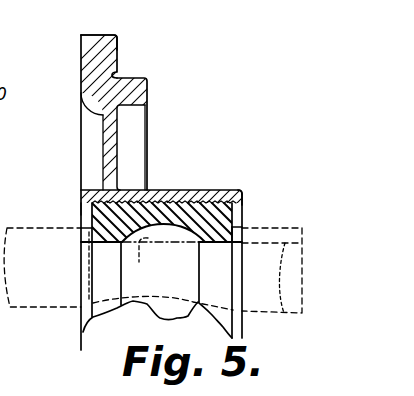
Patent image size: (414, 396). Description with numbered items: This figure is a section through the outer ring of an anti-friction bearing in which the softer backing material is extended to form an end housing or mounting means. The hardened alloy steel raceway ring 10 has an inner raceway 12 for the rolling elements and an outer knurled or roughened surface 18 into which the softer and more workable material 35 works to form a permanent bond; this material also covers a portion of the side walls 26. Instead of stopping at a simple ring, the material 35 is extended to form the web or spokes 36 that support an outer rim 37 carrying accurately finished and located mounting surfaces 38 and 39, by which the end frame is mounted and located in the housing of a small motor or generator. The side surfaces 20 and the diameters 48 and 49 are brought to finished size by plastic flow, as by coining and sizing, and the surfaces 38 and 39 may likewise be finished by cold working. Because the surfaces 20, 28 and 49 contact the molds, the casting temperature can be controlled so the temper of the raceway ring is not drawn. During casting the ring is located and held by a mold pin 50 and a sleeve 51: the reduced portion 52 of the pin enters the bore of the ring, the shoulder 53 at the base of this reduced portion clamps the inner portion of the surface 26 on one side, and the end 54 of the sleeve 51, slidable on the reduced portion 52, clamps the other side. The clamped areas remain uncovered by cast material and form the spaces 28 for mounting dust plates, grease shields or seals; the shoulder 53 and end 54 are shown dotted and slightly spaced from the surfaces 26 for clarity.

The raceway ring 10 is at (244, 213).
The inner raceway 12 is at (167, 227).
The knurled or roughened surface 18 is at (188, 196).
The side surface 20 is at (243, 195).
The side wall 26 is at (235, 243).
The space for mounting plates 28 is at (236, 231).
The softer and more workable material 35 is at (217, 196).
The web or spokes 36 is at (115, 159).
The outer rim 37 is at (88, 75).
The mounting surface 38 is at (134, 78).
The mounting surface 39 is at (118, 47).
The diameter 48 is at (94, 190).
The diameter 49 is at (170, 190).
The mold pin 50 is at (22, 234).
The sleeve 51 is at (302, 231).
The reduced portion 52 is at (316, 260).
The shoulder 53 is at (92, 278).
The end of sleeve 54 is at (231, 281).